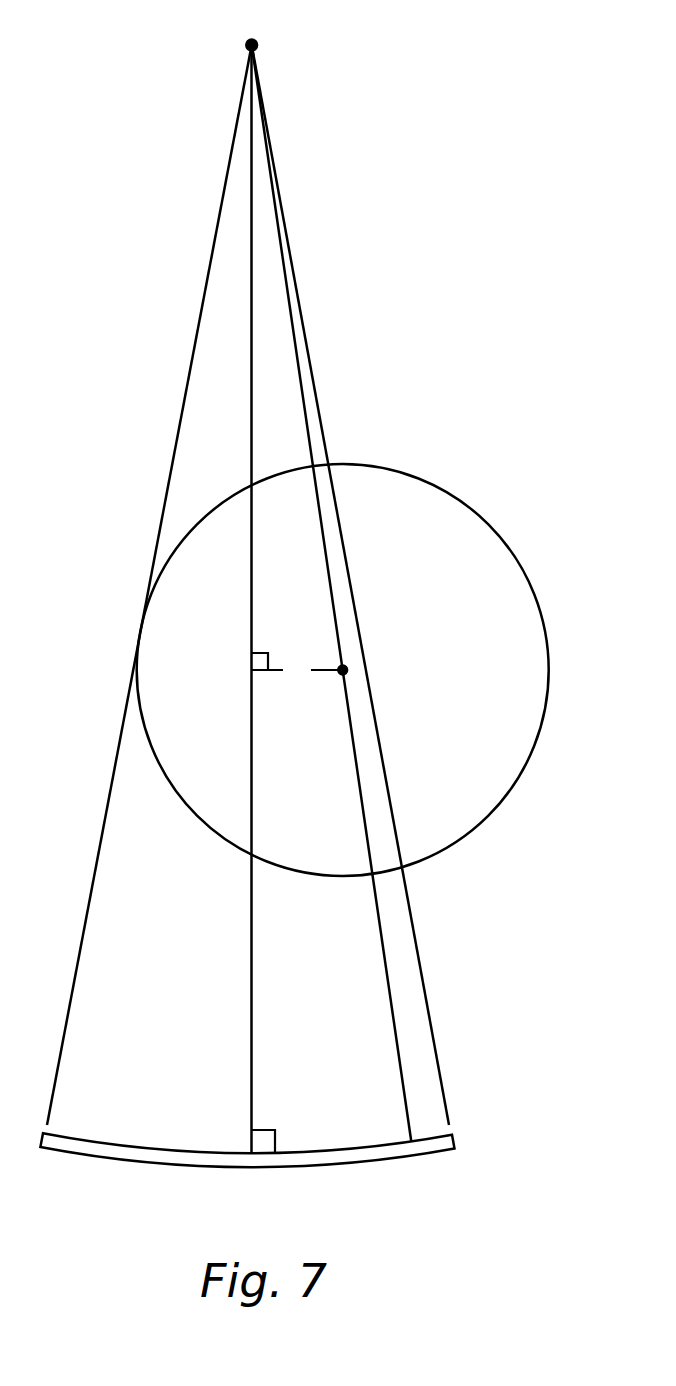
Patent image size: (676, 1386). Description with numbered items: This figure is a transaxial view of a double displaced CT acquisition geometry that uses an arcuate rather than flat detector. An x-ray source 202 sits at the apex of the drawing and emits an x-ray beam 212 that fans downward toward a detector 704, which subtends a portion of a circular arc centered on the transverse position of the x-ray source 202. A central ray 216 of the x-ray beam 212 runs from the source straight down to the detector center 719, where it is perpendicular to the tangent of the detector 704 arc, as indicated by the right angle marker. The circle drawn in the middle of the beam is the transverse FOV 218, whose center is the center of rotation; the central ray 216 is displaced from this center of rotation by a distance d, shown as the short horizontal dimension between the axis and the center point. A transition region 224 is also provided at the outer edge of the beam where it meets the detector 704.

The x-ray source 202 is at (244, 47).
The x-ray beam 212 is at (213, 338).
The central ray 216 is at (251, 440).
The transverse FOV 218 is at (458, 498).
The transition region 224 is at (433, 1148).
The detector 704 is at (143, 1155).
The detector center 719 is at (248, 1150).